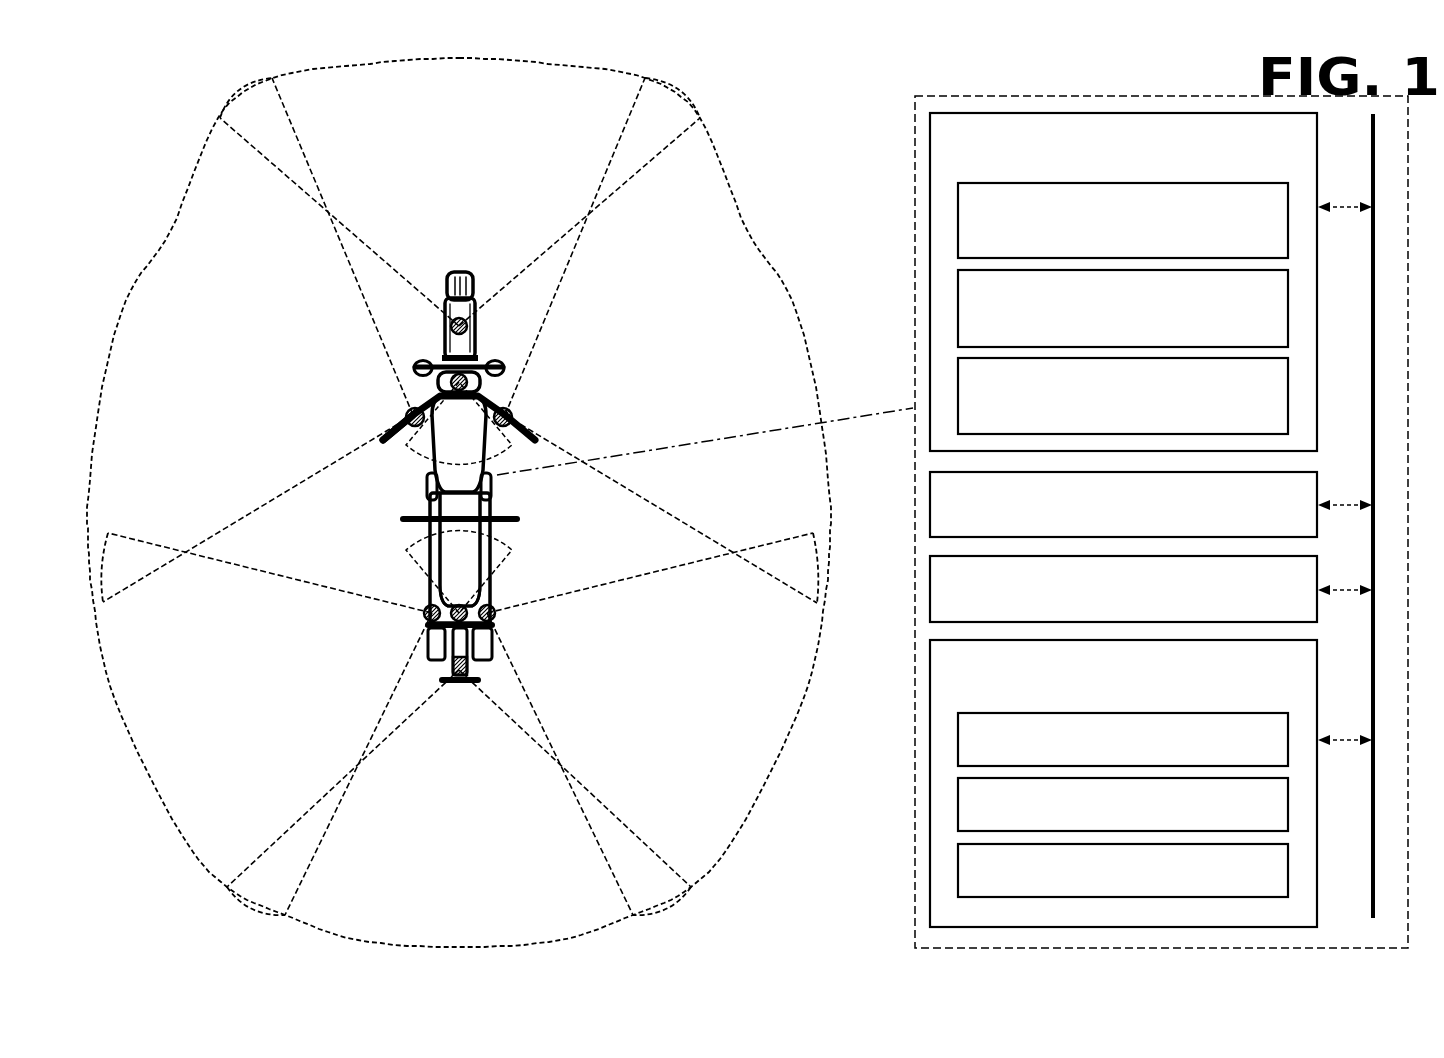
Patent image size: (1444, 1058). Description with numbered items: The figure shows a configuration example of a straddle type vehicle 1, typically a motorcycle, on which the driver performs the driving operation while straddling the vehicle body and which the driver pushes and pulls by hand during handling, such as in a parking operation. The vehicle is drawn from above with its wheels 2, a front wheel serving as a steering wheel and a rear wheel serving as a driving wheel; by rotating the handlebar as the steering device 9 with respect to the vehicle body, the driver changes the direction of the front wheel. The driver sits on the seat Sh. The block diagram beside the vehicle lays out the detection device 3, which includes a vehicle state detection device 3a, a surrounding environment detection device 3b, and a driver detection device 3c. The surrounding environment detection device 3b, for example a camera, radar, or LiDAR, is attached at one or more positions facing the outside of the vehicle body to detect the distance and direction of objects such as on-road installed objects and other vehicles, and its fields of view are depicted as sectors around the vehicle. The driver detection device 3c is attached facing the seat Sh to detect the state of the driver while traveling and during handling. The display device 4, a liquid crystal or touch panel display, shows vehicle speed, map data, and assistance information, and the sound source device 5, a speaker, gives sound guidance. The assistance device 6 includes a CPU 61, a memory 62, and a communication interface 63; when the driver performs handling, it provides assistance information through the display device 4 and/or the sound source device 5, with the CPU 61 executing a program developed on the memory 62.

The straddle type vehicle 1 is at (172, 126).
The wheels 2 is at (458, 268).
The detection device 3 is at (930, 133).
The vehicle state detection device 3a is at (958, 212).
The surrounding environment detection device 3b is at (467, 323).
The driver detection device 3c is at (468, 380).
The display device 4 is at (422, 348).
The sound source device 5 is at (930, 585).
The assistance device 6 is at (930, 660).
The CPU 61 is at (958, 742).
The memory 62 is at (958, 805).
The communication interface 63 is at (958, 871).
The steering device 9 is at (382, 418).
The seat Sh is at (467, 557).